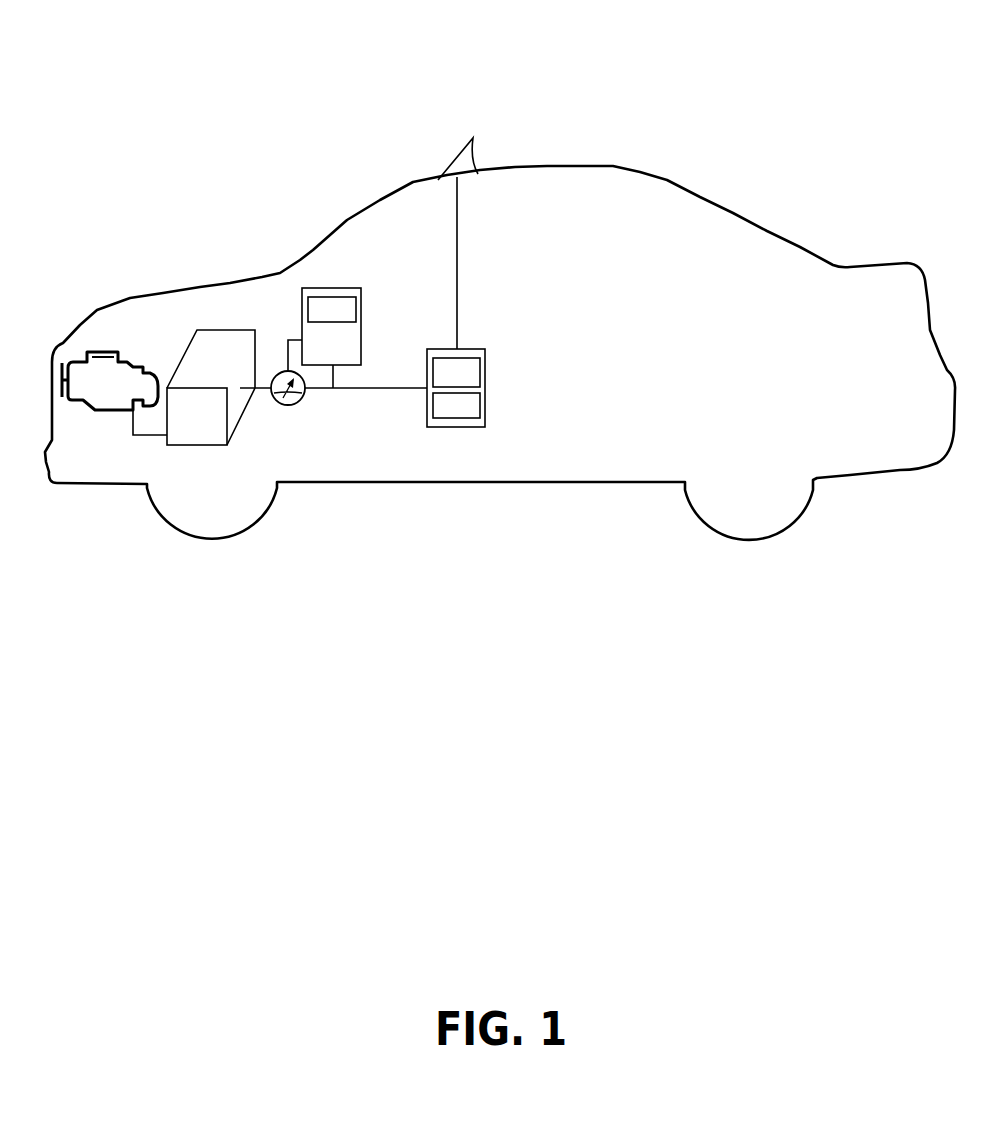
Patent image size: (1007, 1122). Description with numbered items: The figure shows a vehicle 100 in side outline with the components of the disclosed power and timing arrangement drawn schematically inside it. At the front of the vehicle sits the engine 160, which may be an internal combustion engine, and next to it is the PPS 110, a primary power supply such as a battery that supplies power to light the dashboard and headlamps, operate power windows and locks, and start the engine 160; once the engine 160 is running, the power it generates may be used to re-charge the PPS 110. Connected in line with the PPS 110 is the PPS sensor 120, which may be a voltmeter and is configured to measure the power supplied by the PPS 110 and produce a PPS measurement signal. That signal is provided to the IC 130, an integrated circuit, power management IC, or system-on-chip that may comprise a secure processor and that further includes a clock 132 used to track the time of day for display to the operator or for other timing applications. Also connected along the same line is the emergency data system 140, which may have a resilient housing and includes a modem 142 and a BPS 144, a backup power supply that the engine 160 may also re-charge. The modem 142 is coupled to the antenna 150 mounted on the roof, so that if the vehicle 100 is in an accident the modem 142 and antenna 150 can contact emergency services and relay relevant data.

The vehicle 100 is at (752, 93).
The PPS (primary power supply) 110 is at (233, 417).
The PPS sensor 120 is at (297, 402).
The IC (integrated circuit) 130 is at (332, 288).
The clock 132 is at (357, 310).
The emergency data system 140 is at (472, 349).
The modem 142 is at (482, 372).
The BPS (backup power supply) 144 is at (482, 407).
The antenna 150 is at (478, 155).
The engine 160 is at (122, 360).